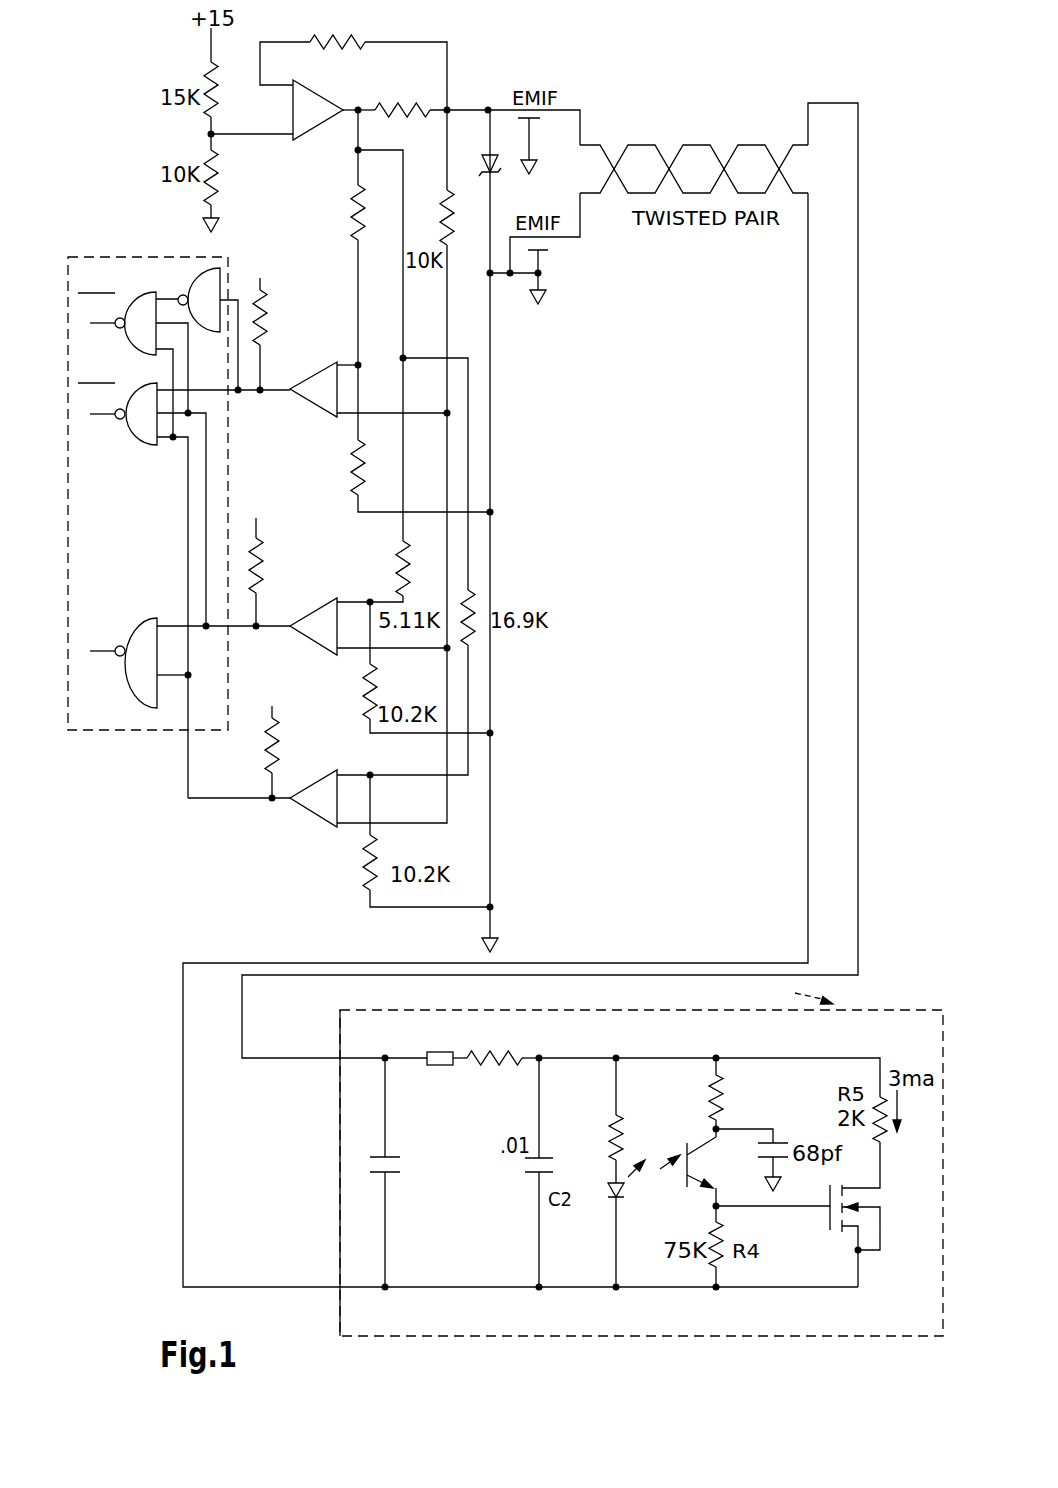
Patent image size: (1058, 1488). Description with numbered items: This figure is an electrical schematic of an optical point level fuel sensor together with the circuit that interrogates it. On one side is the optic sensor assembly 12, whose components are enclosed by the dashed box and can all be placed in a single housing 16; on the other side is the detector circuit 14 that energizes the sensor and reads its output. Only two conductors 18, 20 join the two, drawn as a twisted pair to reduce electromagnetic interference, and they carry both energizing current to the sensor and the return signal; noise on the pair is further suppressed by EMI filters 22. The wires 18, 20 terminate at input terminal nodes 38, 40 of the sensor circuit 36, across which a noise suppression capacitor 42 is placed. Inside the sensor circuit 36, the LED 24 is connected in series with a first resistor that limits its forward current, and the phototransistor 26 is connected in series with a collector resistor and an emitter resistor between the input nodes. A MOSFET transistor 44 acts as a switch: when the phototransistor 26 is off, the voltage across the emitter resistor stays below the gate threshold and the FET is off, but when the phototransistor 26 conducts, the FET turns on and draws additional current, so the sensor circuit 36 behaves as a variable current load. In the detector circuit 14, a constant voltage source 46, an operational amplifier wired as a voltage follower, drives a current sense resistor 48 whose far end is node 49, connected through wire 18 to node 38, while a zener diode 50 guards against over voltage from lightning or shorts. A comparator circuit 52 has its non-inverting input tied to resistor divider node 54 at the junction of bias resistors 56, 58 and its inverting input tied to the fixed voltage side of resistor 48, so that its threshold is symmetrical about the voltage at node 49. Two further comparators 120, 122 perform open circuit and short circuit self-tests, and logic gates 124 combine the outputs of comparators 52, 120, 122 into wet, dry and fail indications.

The optic sensor assembly 12 is at (677, 1346).
The detector circuit 14 is at (503, 42).
The housing 16 is at (339, 1185).
The wire 18 is at (583, 140).
The wire 20 is at (590, 197).
The EMI filter 22 is at (535, 119).
The LED 24 is at (617, 1202).
The phototransistor 26 is at (684, 1155).
The sensor circuit 36 is at (883, 1030).
The input terminal node 38 is at (385, 1052).
The input terminal node 40 is at (388, 1292).
The noise suppression capacitor 42 is at (390, 1177).
The MOSFET transistor 44 is at (828, 1217).
The constant voltage source 46 is at (300, 150).
The current sense resistor 48 is at (390, 106).
The node 49 is at (450, 108).
The zener diode 50 is at (500, 178).
The comparator circuit 52 is at (340, 352).
The resistor divider node 54 is at (363, 363).
The bias resistor 56 is at (356, 240).
The bias resistor 58 is at (358, 490).
The comparator circuit 120 is at (346, 592).
The comparator circuit 122 is at (286, 861).
The logic gates 124 is at (158, 254).